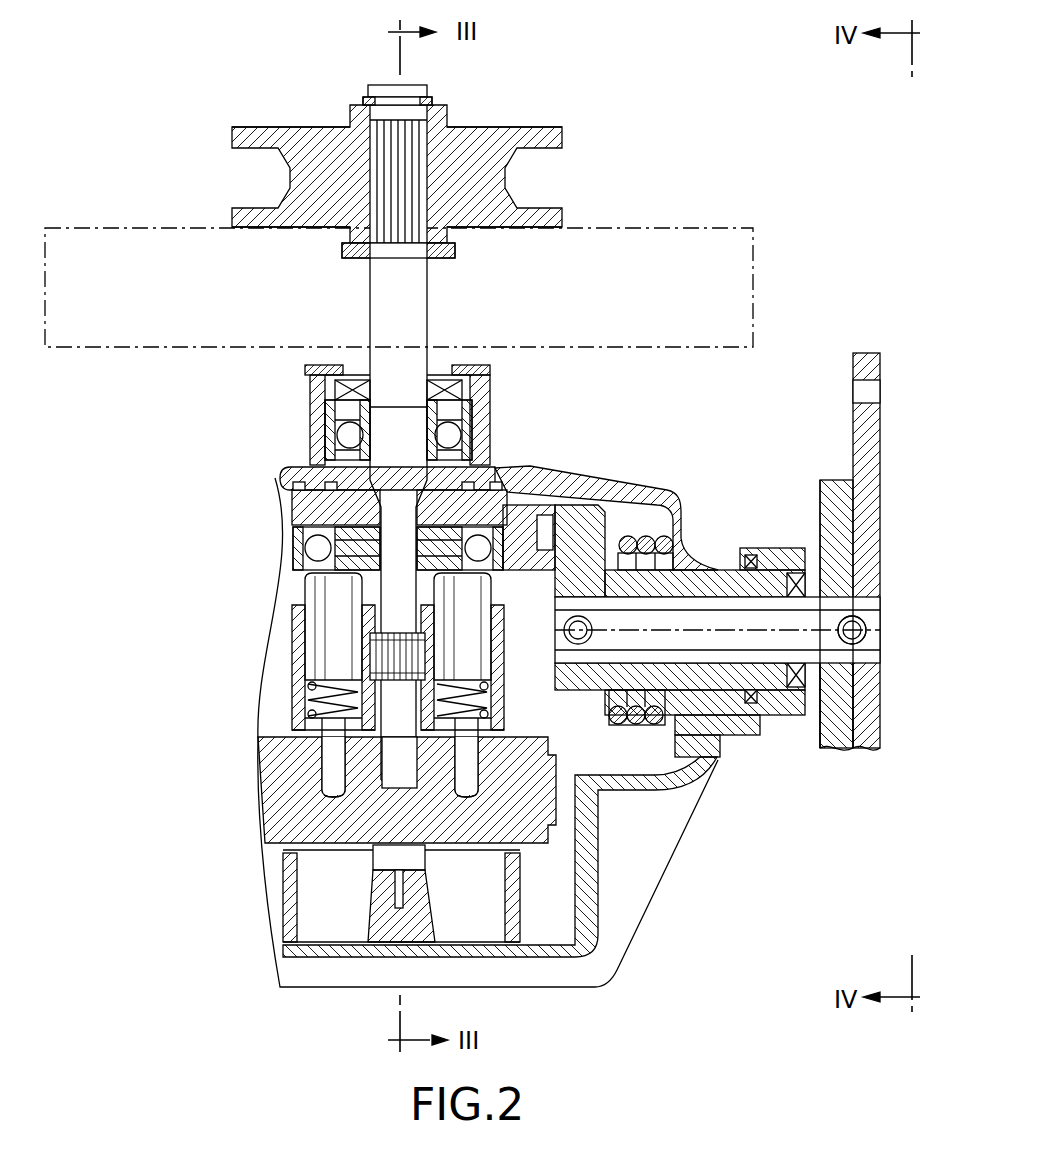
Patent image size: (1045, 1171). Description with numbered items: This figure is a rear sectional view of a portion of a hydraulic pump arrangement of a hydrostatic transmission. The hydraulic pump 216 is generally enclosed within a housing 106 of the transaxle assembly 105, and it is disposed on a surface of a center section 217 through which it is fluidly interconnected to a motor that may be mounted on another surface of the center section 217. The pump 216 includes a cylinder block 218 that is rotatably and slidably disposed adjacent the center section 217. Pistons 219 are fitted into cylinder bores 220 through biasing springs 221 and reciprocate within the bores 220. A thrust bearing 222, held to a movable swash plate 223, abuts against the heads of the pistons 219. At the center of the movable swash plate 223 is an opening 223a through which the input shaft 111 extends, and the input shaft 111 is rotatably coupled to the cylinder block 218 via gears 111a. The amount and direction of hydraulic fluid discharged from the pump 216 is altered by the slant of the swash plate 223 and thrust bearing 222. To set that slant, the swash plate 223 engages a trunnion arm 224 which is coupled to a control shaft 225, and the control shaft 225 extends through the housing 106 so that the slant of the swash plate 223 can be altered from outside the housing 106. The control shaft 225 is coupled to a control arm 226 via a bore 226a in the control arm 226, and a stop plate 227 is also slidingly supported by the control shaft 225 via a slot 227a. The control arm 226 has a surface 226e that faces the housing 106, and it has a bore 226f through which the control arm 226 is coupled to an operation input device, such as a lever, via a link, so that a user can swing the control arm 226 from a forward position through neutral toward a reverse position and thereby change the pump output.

The transaxle assembly 105 is at (786, 322).
The housing 106 is at (625, 492).
The input shaft 111 is at (392, 487).
The gears 111a is at (392, 660).
The hydraulic pump 216 is at (266, 695).
The center section 217 is at (310, 822).
The cylinder block 218 is at (298, 653).
The pistons 219 is at (322, 615).
The cylinder bores 220 is at (310, 703).
The biasing springs 221 is at (332, 788).
The thrust bearing 222 is at (322, 575).
The movable swash plate 223 is at (322, 512).
The opening 223a is at (380, 503).
The trunnion arm 224 is at (577, 520).
The control shaft 225 is at (707, 630).
The control arm 226 is at (850, 426).
The bore 226a is at (862, 597).
The surface 226e is at (852, 456).
The bore 226f is at (862, 382).
The stop plate 227 is at (837, 748).
The slot 227a is at (843, 665).